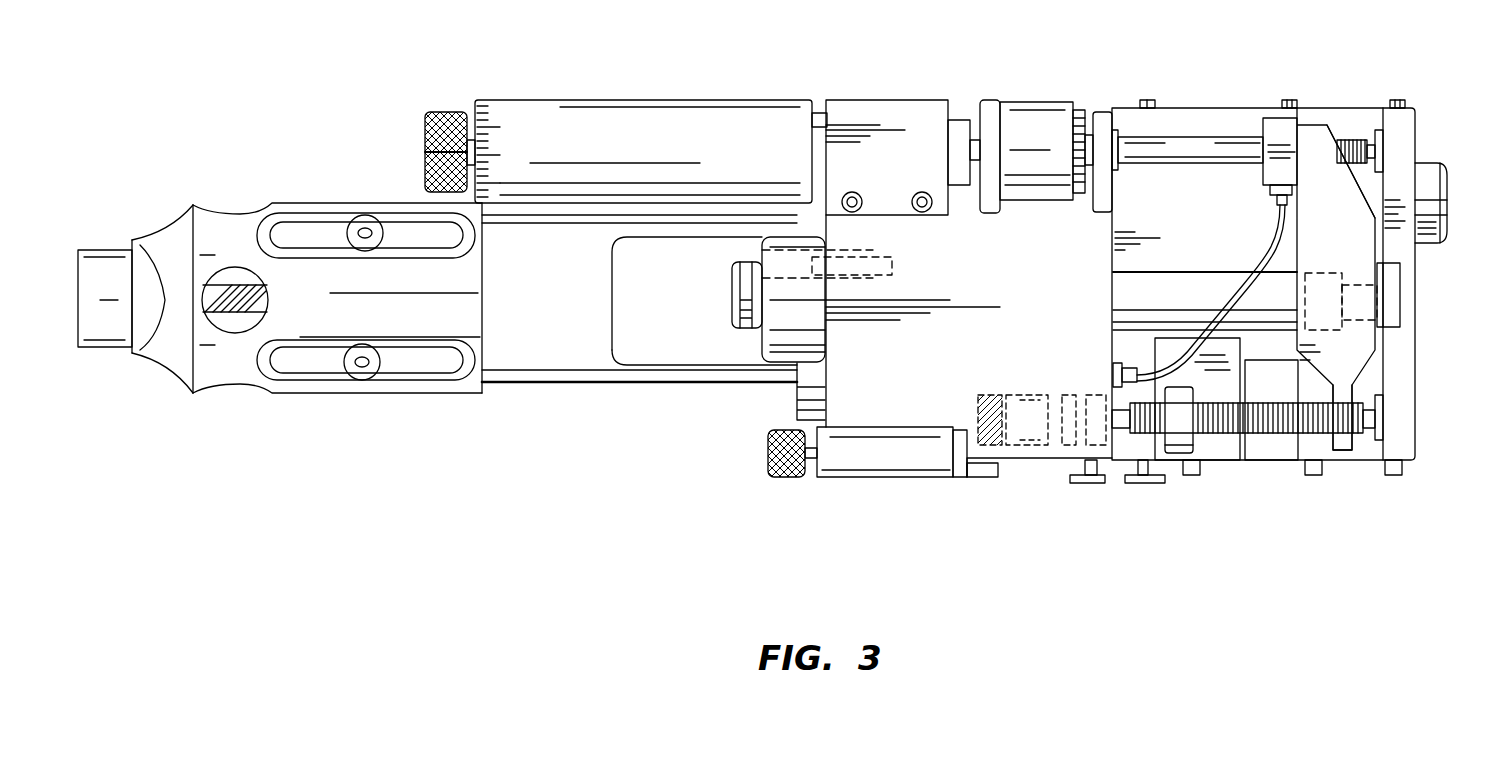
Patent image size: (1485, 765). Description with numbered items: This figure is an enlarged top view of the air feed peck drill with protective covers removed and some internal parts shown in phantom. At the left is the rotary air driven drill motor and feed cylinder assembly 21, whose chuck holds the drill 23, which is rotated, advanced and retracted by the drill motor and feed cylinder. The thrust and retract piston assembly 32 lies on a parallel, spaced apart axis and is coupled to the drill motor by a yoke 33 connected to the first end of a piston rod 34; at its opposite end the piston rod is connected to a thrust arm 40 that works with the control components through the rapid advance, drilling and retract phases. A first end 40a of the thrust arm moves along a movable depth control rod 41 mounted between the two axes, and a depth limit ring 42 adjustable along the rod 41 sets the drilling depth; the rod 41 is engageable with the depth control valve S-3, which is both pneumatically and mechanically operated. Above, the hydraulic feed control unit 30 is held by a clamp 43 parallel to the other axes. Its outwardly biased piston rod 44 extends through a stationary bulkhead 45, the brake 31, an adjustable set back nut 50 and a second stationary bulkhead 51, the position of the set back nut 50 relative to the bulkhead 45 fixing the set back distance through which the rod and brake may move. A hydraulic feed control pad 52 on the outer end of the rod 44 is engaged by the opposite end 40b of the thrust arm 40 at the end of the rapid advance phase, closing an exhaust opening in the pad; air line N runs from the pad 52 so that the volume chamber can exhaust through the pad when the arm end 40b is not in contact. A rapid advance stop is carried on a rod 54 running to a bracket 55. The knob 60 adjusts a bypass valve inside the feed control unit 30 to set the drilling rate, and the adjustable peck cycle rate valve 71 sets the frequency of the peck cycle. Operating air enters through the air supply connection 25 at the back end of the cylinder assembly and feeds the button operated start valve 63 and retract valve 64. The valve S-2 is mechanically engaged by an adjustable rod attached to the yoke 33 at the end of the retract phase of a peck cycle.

The drill motor and feed cylinder assembly 21 is at (602, 386).
The drill 23 is at (260, 294).
The air supply connection 25 is at (1433, 236).
The hydraulic feed control unit 30 is at (606, 96).
The brake 31 is at (1030, 123).
The thrust and retract piston assembly 32 is at (993, 339).
The yoke 33 is at (692, 309).
The piston rod 34 is at (1202, 309).
The thrust arm 40 is at (1350, 229).
The first end of thrust arm 40a is at (1345, 395).
The opposite end of thrust arm 40b is at (1317, 135).
The depth control rod 41 is at (1223, 432).
The depth limit ring 42 is at (1188, 437).
The clamp 43 is at (877, 115).
The piston rod 44 is at (1208, 163).
The stationary bulkhead 45 is at (990, 110).
The set back nut 50 is at (1080, 115).
The stationary bulkhead 51 is at (1103, 125).
The hydraulic feed control pad 52 is at (1273, 125).
The rod 54 is at (1357, 140).
The bracket 55 is at (1403, 137).
The knob 60 is at (446, 111).
The start valve 63 is at (1085, 487).
The retract valve 64 is at (1143, 487).
The peck cycle rate valve 71 is at (790, 479).
The air line N is at (1260, 266).
The valve S-2 is at (858, 250).
The depth control valve S-3 is at (1053, 395).